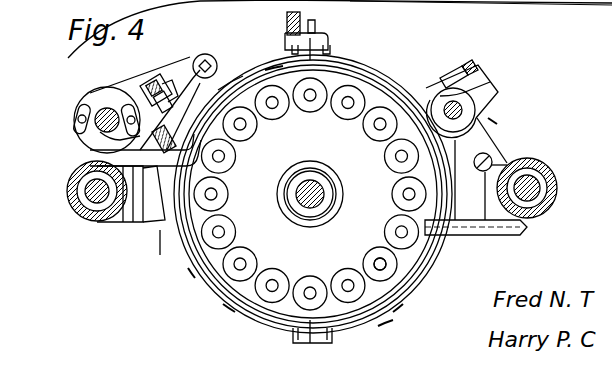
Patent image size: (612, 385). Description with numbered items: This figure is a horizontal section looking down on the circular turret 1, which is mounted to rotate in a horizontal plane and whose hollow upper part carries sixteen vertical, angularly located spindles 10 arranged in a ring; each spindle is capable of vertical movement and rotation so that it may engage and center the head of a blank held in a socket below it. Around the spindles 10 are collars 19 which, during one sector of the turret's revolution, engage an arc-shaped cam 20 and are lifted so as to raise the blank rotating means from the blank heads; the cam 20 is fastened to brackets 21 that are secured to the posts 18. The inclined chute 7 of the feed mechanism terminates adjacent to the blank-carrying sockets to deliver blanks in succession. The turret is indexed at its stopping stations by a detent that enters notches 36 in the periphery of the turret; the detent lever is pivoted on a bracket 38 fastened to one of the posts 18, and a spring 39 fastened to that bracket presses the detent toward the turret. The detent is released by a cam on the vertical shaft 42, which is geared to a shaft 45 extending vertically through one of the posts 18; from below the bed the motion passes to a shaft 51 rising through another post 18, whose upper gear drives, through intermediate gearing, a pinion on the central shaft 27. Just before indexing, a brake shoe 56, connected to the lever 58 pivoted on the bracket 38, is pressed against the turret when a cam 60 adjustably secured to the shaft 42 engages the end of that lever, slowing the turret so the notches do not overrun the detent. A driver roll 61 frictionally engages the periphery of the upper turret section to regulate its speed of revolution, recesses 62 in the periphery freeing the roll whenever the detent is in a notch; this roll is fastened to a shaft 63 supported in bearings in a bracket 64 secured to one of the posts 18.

The circular turret 1 is at (160, 256).
The inclined chute 7 is at (306, 15).
The spindles 10 is at (246, 272).
The posts 18 is at (67, 194).
The collars 19 is at (378, 270).
The arc-shaped cam 20 is at (384, 82).
The brackets 21 is at (96, 156).
The shaft 27 is at (316, 180).
The notches 36 is at (414, 300).
The bracket 38 is at (143, 90).
The spring 39 is at (172, 80).
The vertical shaft 42 is at (105, 104).
The shaft 45 is at (84, 202).
The shaft 51 is at (522, 222).
The brake shoe 56 is at (230, 72).
The lever 58 is at (205, 54).
The cam 60 is at (110, 138).
The driver roll 61 is at (155, 180).
The recesses 62 is at (264, 64).
The shaft 63 is at (490, 72).
The bracket 64 is at (512, 148).